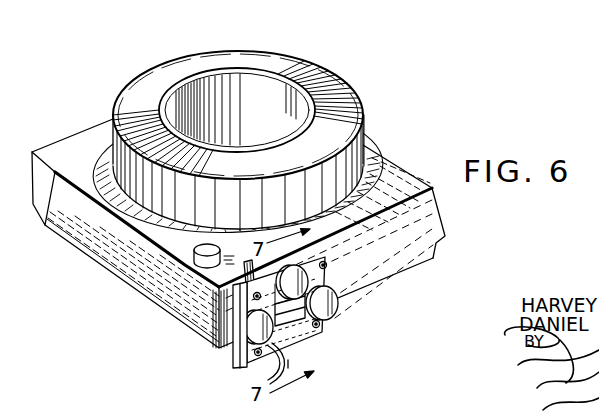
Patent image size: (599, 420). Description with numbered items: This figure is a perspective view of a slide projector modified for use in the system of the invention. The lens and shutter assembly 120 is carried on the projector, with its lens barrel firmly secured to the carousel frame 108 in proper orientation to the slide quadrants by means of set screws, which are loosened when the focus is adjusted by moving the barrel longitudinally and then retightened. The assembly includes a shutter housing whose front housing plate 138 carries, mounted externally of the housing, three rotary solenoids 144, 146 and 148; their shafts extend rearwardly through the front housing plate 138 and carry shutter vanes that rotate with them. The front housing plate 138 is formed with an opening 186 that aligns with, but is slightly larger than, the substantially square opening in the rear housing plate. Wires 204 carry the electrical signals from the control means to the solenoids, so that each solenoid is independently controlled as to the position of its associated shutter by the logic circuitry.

The carousel frame 108 is at (367, 86).
The rotary solenoid 144 is at (250, 264).
The lens and shutter assembly 120 is at (333, 250).
The front housing plate 138 is at (304, 338).
The rotary solenoid 146 is at (337, 306).
The opening 186 is at (320, 328).
The rotary solenoid 148 is at (236, 362).
The wires 204 is at (268, 360).